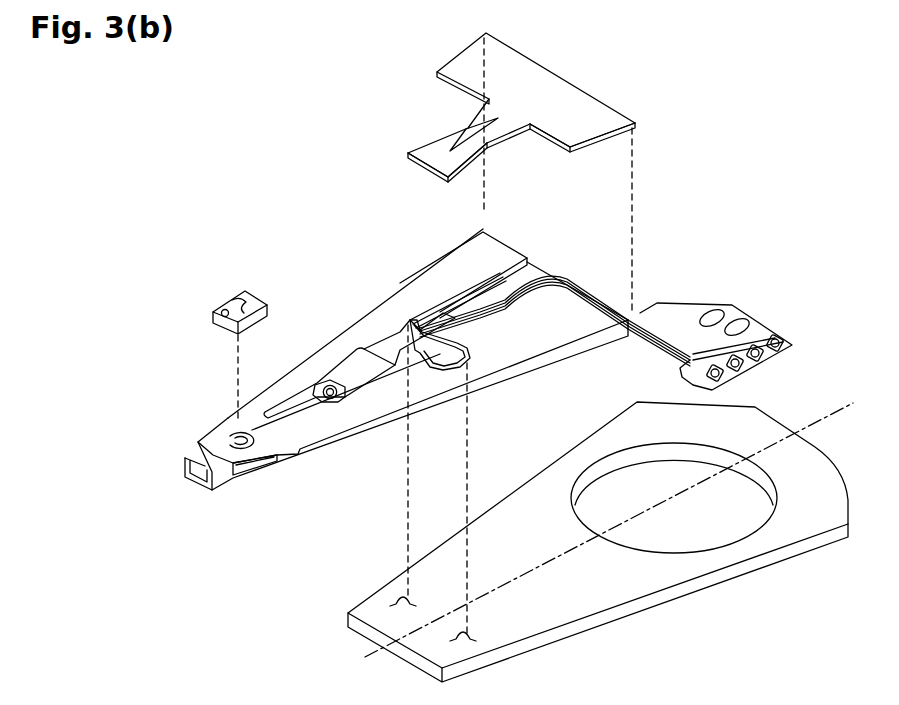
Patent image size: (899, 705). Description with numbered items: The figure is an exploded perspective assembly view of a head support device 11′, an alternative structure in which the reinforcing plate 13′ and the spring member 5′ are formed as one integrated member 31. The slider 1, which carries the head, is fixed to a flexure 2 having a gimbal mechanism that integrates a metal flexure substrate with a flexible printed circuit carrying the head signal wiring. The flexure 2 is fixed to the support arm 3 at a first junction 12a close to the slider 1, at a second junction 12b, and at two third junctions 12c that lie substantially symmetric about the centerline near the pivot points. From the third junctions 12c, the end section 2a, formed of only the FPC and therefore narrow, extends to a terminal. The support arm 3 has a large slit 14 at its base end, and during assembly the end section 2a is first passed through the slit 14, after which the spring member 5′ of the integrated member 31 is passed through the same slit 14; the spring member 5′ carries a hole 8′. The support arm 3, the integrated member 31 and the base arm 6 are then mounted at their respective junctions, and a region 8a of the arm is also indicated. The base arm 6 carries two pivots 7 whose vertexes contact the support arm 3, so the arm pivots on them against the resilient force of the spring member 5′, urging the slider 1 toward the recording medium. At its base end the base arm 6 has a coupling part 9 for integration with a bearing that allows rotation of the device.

The integrated member 31 is at (511, 71).
The hole 8′ is at (468, 129).
The spring member 5′ is at (437, 153).
The reinforcing plate 13′ is at (568, 133).
The head support device 11′ is at (283, 141).
The slider 1 is at (222, 305).
The flexure 2 is at (213, 444).
The end section 2a is at (568, 278).
The support arm 3 is at (345, 350).
The slit 14 is at (517, 290).
The first junction 12a is at (323, 385).
The second junction 12b is at (368, 335).
The third junctions 12c is at (458, 345).
The base portion 8a is at (373, 388).
The base arm 6 is at (583, 600).
The coupling part 9 is at (772, 462).
The pivots 7 is at (453, 640).